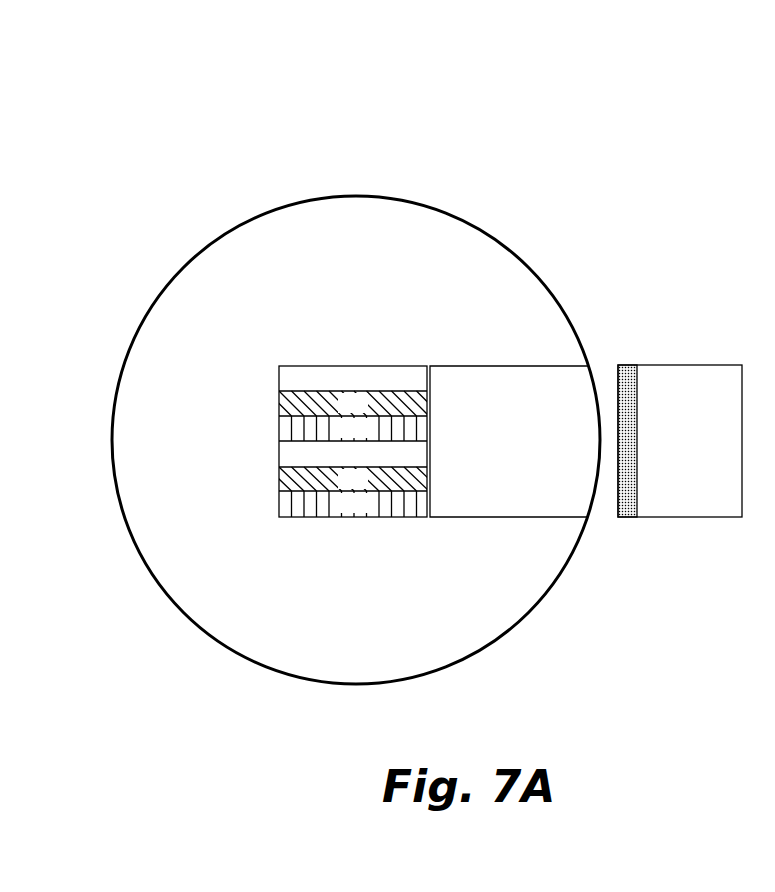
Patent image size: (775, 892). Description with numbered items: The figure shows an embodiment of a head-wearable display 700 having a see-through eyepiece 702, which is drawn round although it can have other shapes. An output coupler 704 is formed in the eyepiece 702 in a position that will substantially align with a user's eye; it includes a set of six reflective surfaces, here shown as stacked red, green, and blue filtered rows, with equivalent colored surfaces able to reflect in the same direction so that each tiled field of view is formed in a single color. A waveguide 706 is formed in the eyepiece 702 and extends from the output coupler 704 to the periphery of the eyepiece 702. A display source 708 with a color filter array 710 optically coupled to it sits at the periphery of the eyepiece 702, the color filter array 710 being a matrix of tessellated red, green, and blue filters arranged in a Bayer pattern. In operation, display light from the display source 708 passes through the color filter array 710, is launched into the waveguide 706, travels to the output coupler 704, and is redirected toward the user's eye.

The head-wearable display 700 is at (457, 101).
The eyepiece 702 is at (244, 640).
The output coupler 704 is at (280, 366).
The waveguide 706 is at (493, 442).
The display source 708 is at (680, 470).
The color filter array 710 is at (632, 497).